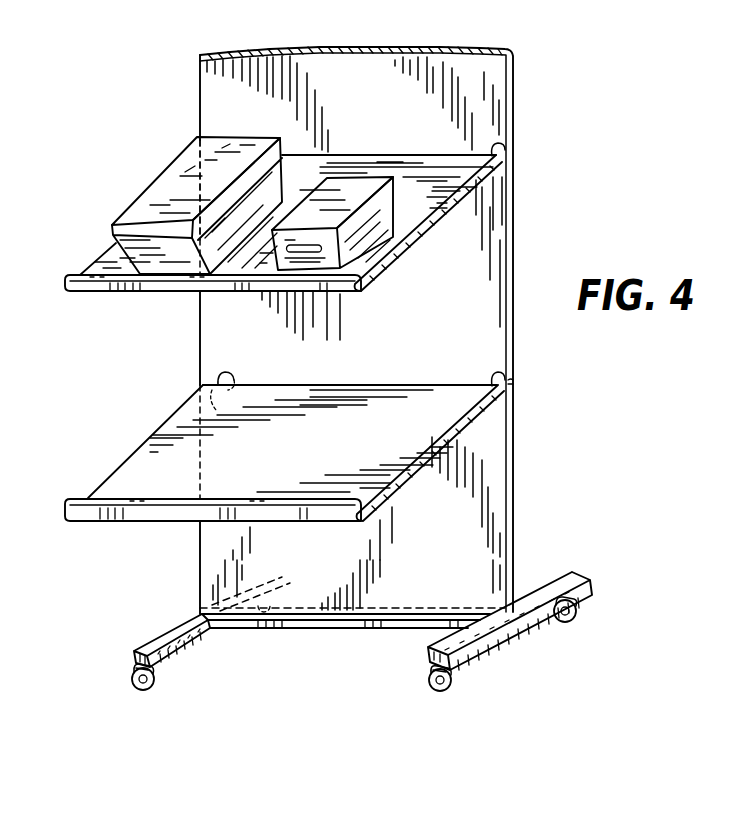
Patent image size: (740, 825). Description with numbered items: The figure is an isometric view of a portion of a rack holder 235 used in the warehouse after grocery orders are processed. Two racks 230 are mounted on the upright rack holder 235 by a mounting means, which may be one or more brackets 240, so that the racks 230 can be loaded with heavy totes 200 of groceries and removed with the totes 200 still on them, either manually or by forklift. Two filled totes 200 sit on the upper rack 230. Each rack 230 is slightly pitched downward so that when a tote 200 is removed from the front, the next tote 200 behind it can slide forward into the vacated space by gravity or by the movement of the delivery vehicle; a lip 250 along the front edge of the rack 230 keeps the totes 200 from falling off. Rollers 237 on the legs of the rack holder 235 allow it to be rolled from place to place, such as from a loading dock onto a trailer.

The tote 200 is at (157, 198).
The rack 230 is at (393, 247).
The rack holder 235 is at (490, 108).
The roller 237 is at (130, 670).
The bracket 240 is at (518, 359).
The lip 250 is at (318, 284).